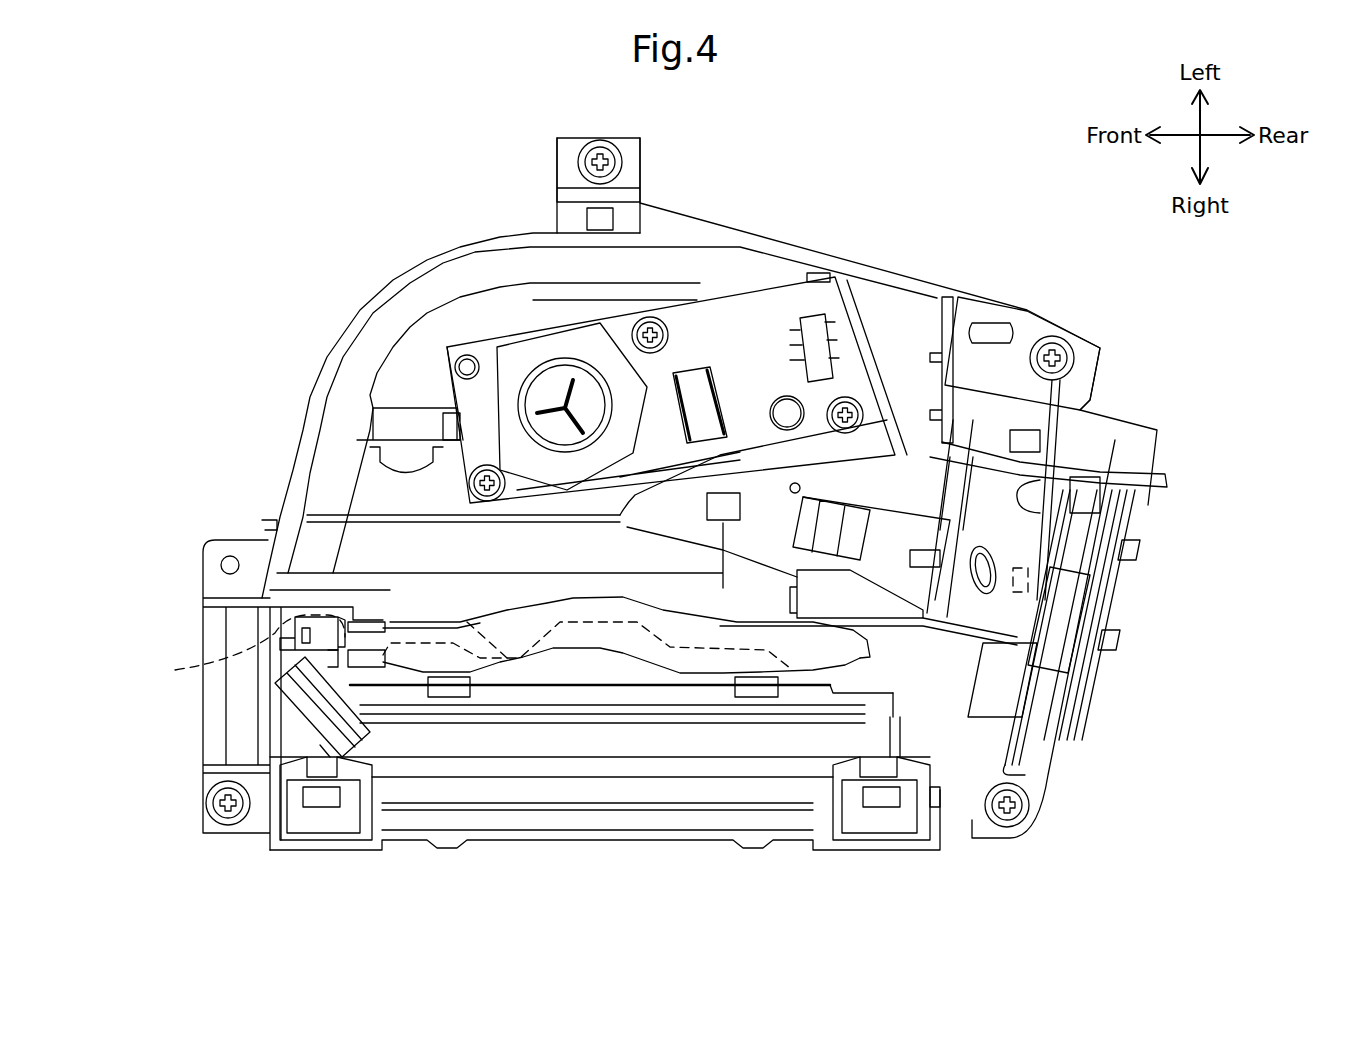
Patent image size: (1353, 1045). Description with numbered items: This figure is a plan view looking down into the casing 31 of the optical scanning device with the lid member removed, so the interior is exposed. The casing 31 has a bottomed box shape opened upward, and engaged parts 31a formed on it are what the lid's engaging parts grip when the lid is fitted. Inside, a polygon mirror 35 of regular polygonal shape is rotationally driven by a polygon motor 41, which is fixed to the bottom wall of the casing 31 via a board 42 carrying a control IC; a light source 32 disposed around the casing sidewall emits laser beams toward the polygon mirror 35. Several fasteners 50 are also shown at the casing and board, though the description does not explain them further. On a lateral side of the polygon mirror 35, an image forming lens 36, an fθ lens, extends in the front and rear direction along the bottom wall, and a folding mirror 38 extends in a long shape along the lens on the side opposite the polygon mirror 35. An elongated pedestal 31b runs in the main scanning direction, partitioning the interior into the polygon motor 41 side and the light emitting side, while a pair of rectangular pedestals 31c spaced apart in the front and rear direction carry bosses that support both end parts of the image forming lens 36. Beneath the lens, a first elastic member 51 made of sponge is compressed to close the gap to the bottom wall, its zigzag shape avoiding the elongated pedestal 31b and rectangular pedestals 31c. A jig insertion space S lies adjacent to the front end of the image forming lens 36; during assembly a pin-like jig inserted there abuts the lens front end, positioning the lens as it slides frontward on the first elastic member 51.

The casing 31 is at (659, 851).
The engaged parts 31a is at (600, 227).
The elongated pedestal 31b is at (948, 383).
The rectangular pedestals 31c is at (440, 690).
The light source 32 is at (1020, 570).
The polygon mirror 35 is at (588, 347).
The image forming lens 36 is at (543, 630).
The folding mirror 38 is at (567, 770).
The polygon motor 41 is at (622, 357).
The board 42 is at (723, 337).
The screws 50 is at (605, 155).
The first elastic member 51 is at (680, 673).
The jig insertion space S is at (509, 643).